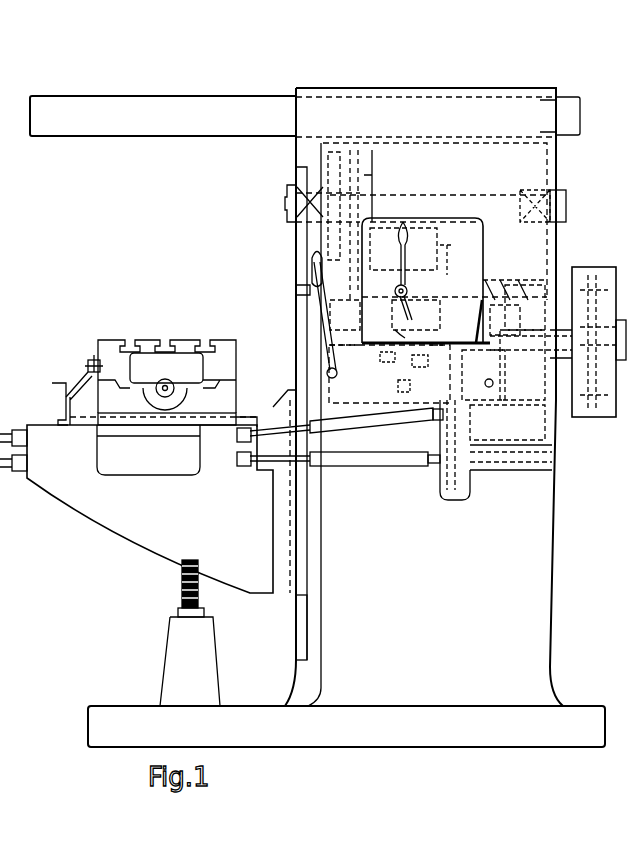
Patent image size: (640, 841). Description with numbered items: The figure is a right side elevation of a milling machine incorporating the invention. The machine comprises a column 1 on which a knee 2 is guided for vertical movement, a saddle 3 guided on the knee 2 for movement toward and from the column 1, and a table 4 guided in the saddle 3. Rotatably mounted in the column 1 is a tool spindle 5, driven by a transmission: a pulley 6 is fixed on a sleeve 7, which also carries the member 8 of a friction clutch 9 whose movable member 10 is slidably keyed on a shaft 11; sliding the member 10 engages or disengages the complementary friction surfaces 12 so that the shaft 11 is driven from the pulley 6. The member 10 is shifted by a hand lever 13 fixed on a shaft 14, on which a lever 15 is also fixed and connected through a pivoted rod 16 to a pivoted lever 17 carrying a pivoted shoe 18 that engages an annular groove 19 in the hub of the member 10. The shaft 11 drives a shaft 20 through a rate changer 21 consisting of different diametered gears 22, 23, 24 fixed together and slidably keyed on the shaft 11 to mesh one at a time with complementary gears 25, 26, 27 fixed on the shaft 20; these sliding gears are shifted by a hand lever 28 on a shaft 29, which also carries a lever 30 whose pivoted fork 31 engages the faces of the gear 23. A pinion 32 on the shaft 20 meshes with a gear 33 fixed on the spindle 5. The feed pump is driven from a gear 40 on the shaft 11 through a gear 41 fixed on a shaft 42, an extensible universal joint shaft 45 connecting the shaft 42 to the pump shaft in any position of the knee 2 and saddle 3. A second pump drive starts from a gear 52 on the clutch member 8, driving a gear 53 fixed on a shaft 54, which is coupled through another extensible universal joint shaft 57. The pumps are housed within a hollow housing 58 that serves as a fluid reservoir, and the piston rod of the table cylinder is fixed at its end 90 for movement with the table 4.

The column 1 is at (548, 575).
The knee 2 is at (152, 545).
The saddle 3 is at (236, 402).
The table 4 is at (216, 345).
The tool spindle 5 is at (285, 218).
The pulley 6 is at (592, 268).
The sleeve 7 is at (560, 330).
The friction clutch member 8 is at (523, 281).
The friction clutch 9 is at (505, 281).
The movable clutch member 10 is at (493, 283).
The shaft 11 is at (483, 375).
The friction surfaces 12 is at (505, 378).
The hand lever 13 is at (297, 289).
The shaft 14 is at (334, 315).
The lever 15 is at (333, 392).
The pivoted rod 16 is at (381, 398).
The pivoted lever 17 is at (483, 388).
The pivoted shoe 18 is at (488, 322).
The annular groove 19 is at (486, 319).
The shaft 20 is at (454, 280).
The rate changer 21 is at (416, 315).
The gear 22 is at (382, 366).
The gear 23 is at (404, 389).
The gear 24 is at (419, 367).
The gear 25 is at (362, 255).
The gear 26 is at (414, 255).
The gear 27 is at (447, 254).
The hand lever 28 is at (412, 253).
The shaft 29 is at (391, 286).
The lever 30 is at (412, 300).
The pivoted fork 31 is at (395, 333).
The pinion 32 is at (345, 322).
The gear 33 is at (372, 176).
The gear 40 is at (439, 355).
The gear 41 is at (447, 485).
The shaft 42 is at (488, 470).
The extensible universal joint shaft 45 is at (345, 466).
The gear 52 is at (515, 305).
The gear 53 is at (514, 431).
The shaft 54 is at (507, 422).
The extensible universal joint shaft 57 is at (385, 420).
The housing 58 is at (160, 470).
The piston rod end 90 is at (51, 390).